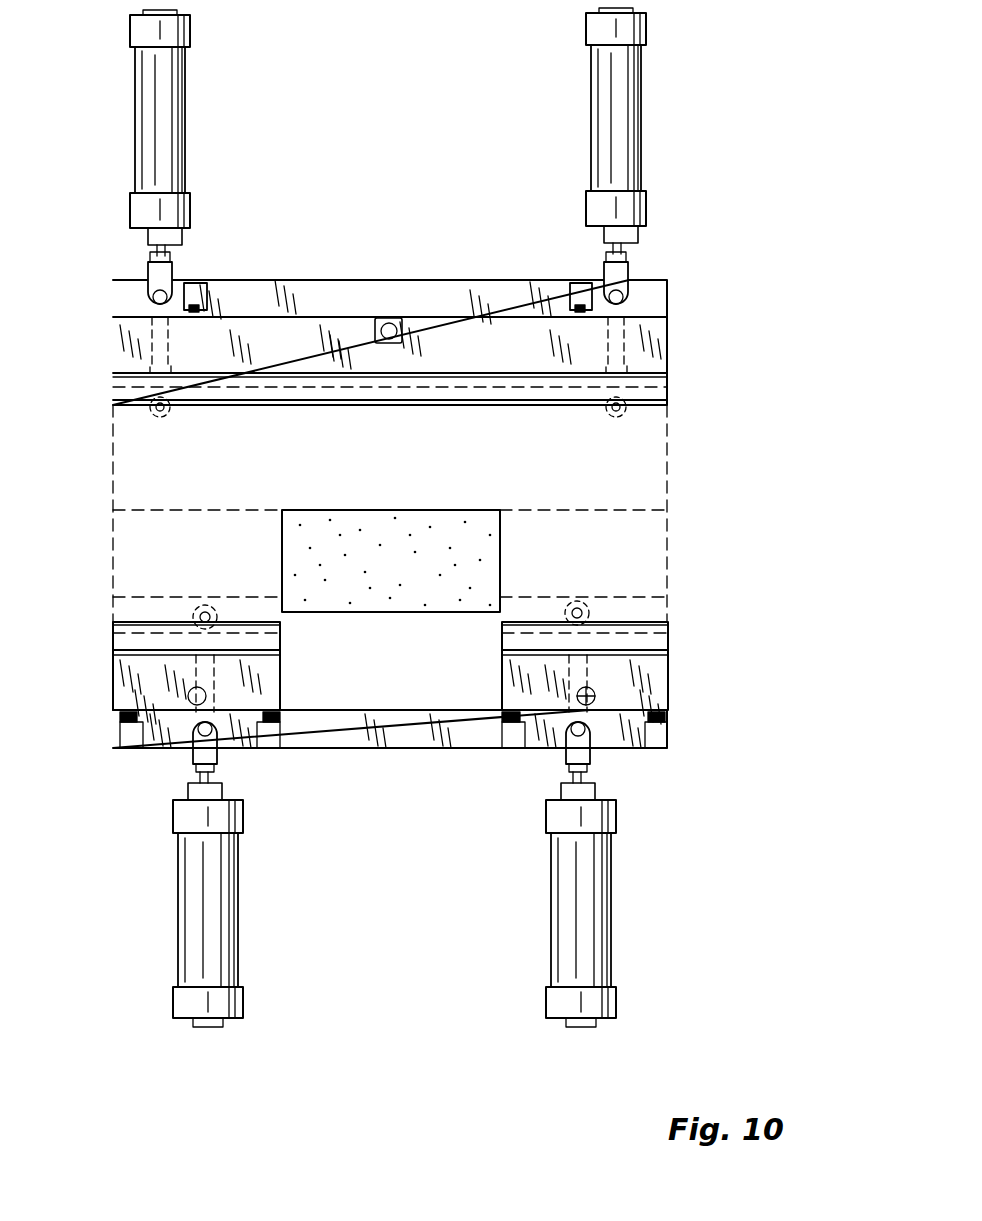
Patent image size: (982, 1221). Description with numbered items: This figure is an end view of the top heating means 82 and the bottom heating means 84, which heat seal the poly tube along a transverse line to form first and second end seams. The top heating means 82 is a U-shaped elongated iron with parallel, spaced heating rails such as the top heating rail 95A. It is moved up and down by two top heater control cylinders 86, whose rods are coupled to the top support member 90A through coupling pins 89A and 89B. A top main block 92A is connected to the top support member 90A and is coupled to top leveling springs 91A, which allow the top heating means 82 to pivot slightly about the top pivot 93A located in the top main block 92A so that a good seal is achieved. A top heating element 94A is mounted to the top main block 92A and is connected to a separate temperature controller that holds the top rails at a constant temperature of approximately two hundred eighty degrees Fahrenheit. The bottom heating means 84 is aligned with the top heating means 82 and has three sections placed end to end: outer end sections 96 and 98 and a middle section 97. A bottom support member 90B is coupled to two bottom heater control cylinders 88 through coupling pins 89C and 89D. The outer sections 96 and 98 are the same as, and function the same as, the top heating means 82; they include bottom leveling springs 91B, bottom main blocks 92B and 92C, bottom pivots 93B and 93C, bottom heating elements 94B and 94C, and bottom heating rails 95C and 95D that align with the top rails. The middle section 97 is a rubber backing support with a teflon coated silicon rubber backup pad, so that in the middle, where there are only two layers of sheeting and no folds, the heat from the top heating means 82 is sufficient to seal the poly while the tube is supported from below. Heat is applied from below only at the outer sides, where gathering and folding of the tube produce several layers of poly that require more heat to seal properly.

The top heating means 82 is at (690, 376).
The bottom heating means 84 is at (737, 672).
The top heater control cylinders 86 is at (190, 122).
The bottom heater control cylinders 88 is at (243, 908).
The coupling pin 89A is at (146, 296).
The coupling pin 89B is at (634, 284).
The coupling pin 89C is at (198, 741).
The coupling pin 89D is at (590, 740).
The top support member 90A is at (407, 288).
The bottom support member 90B is at (405, 722).
The top leveling springs 91A is at (205, 289).
The bottom leveling springs 91B is at (130, 735).
The top main block 92A is at (656, 346).
The bottom main block 92B is at (497, 690).
The bottom main block 92C is at (285, 688).
The top pivot 93A is at (402, 331).
The bottom pivot 93B is at (595, 696).
The bottom pivot 93C is at (190, 696).
The top heating element 94A is at (125, 387).
The bottom heating element 94B is at (668, 650).
The bottom heating element 94C is at (140, 657).
The top heating rail 95A is at (148, 410).
The bottom heating rail 95C is at (140, 627).
The bottom heating rail 95D is at (660, 617).
The outer end section 96 is at (685, 665).
The middle section 97 is at (416, 508).
The outer end section 98 is at (110, 660).